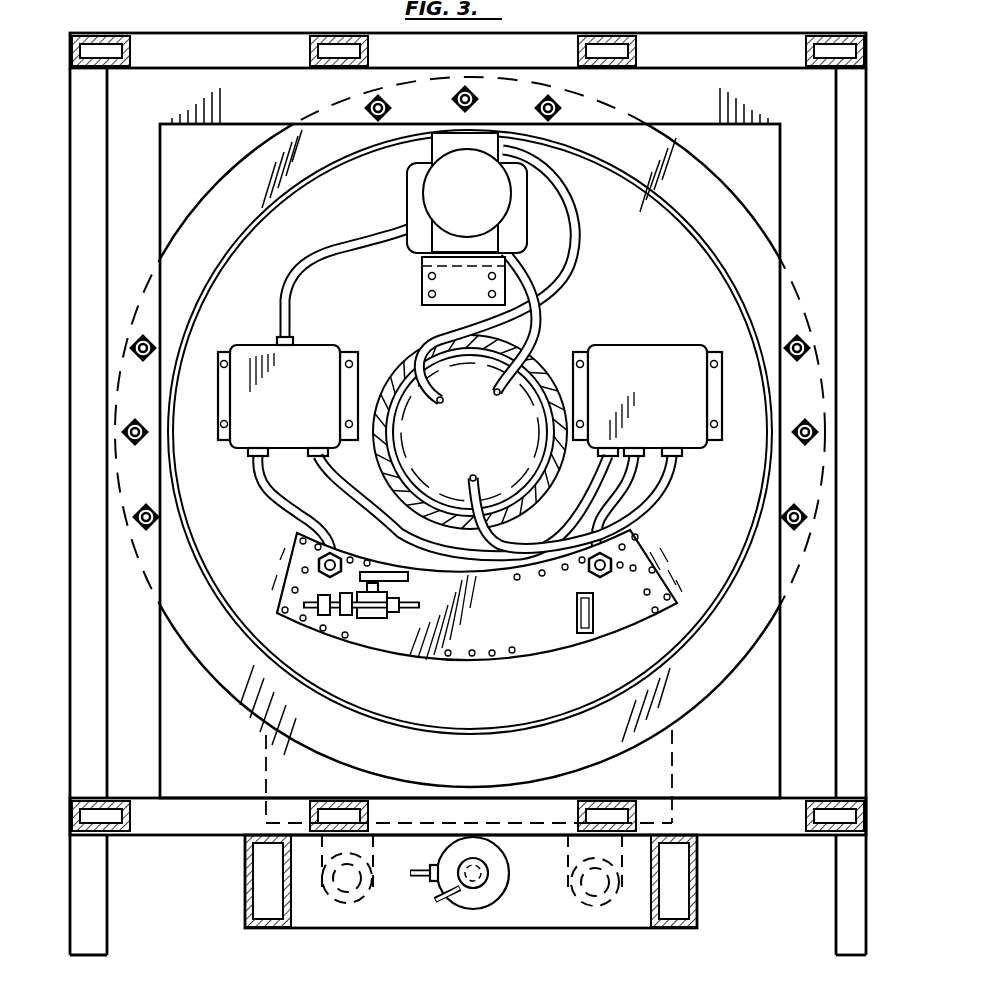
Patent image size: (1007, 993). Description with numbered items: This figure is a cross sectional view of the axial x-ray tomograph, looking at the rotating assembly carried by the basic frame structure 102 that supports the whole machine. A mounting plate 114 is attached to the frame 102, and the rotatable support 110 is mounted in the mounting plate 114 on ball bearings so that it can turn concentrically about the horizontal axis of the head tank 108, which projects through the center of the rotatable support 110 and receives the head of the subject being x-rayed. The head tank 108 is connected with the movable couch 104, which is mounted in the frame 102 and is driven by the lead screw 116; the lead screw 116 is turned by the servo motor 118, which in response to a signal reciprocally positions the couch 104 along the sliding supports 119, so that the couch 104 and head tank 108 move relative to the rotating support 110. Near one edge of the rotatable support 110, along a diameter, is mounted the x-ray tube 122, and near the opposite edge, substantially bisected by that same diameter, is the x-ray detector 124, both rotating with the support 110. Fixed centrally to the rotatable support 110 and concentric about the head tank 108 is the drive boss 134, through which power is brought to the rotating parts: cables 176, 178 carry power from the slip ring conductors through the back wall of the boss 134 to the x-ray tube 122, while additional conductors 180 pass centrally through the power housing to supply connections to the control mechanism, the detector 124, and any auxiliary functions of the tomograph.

The frame structure 102 is at (700, 6).
The movable couch 104 is at (674, 752).
The head tank 108 is at (410, 398).
The rotatable support 110 is at (258, 243).
The mounting plate 114 is at (690, 183).
The lead screw 116 is at (482, 874).
The servo motor 118 is at (480, 905).
The sliding supports 119 is at (348, 900).
The x-ray tube 122 is at (440, 184).
The x-ray detector 124 is at (612, 625).
The drive boss 134 is at (525, 370).
The cable 176 is at (552, 244).
The cable 178 is at (530, 320).
The conductors 180 is at (474, 478).